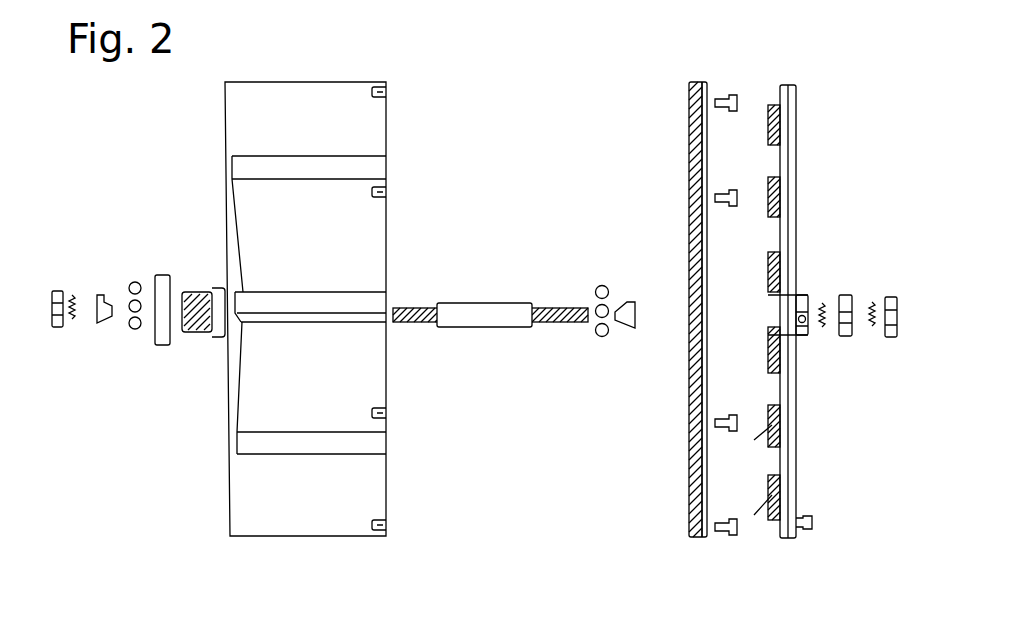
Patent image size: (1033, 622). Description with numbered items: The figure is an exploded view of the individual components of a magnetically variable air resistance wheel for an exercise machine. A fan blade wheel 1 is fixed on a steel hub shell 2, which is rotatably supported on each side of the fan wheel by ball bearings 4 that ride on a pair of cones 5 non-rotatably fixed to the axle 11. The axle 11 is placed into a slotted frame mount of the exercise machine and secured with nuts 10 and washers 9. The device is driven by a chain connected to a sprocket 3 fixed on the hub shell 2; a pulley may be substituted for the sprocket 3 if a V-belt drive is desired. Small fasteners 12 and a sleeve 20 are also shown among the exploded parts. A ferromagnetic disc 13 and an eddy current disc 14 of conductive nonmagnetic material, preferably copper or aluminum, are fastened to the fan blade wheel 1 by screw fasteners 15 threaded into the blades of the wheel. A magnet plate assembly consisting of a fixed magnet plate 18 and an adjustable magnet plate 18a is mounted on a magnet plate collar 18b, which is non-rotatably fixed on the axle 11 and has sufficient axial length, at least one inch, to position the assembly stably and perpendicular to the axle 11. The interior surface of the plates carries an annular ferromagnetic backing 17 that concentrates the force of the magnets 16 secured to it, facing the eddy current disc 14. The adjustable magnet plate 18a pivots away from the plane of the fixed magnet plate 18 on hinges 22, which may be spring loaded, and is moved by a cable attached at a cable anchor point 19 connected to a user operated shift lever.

The fan blade wheel 1 is at (253, 493).
The steel hub shell 2 is at (194, 296).
The sprocket 3 is at (165, 345).
The ball bearings 4 is at (133, 282).
The cones 5 is at (103, 292).
The washers 9 is at (72, 292).
The nuts 10 is at (56, 327).
The axle 11 is at (468, 317).
The fastening screws 12 is at (386, 92).
The ferromagnetic disc 13 is at (689, 132).
The eddy current disc 14 is at (707, 88).
The screw fasteners 15 is at (735, 111).
The magnets 16 is at (754, 440).
The annular ferromagnetic backing 17 is at (781, 85).
The fixed magnet plate 18 is at (796, 105).
The adjustable magnet plate 18a is at (790, 460).
The magnet plate collar 18b is at (770, 305).
The cable anchor point 19 is at (812, 523).
The adjusting sleeve 20 is at (845, 292).
The hinges 22 is at (808, 333).